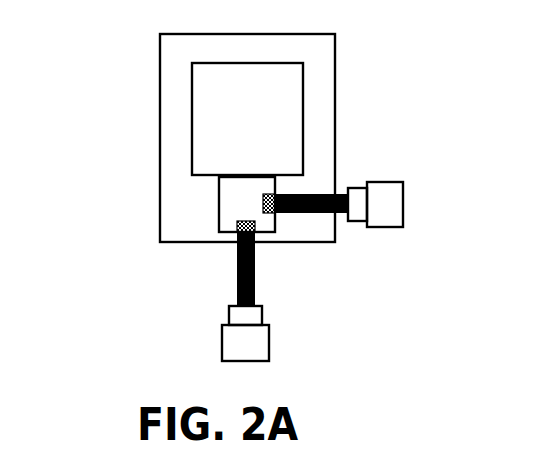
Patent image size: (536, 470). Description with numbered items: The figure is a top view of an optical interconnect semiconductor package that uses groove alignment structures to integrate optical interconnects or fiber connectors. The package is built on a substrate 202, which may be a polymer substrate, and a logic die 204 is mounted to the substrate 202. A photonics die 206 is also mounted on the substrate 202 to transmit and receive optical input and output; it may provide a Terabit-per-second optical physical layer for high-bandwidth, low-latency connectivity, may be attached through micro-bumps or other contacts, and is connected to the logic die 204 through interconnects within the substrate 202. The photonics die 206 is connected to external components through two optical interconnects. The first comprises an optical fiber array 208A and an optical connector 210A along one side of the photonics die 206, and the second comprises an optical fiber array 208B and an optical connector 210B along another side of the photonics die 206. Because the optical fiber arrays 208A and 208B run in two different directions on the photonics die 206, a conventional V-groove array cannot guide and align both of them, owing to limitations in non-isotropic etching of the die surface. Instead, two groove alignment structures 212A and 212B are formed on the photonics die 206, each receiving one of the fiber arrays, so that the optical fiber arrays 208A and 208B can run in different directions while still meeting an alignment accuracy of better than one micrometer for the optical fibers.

The substrate 202 is at (160, 55).
The logic die 204 is at (247, 119).
The photonics die 206 is at (218, 192).
The optical fiber array 208A is at (237, 275).
The optical fiber array 208B is at (325, 194).
The optical connector 210A is at (229, 318).
The optical connector 210B is at (352, 222).
The groove alignment structure 212A is at (238, 222).
The groove alignment structure 212B is at (266, 213).